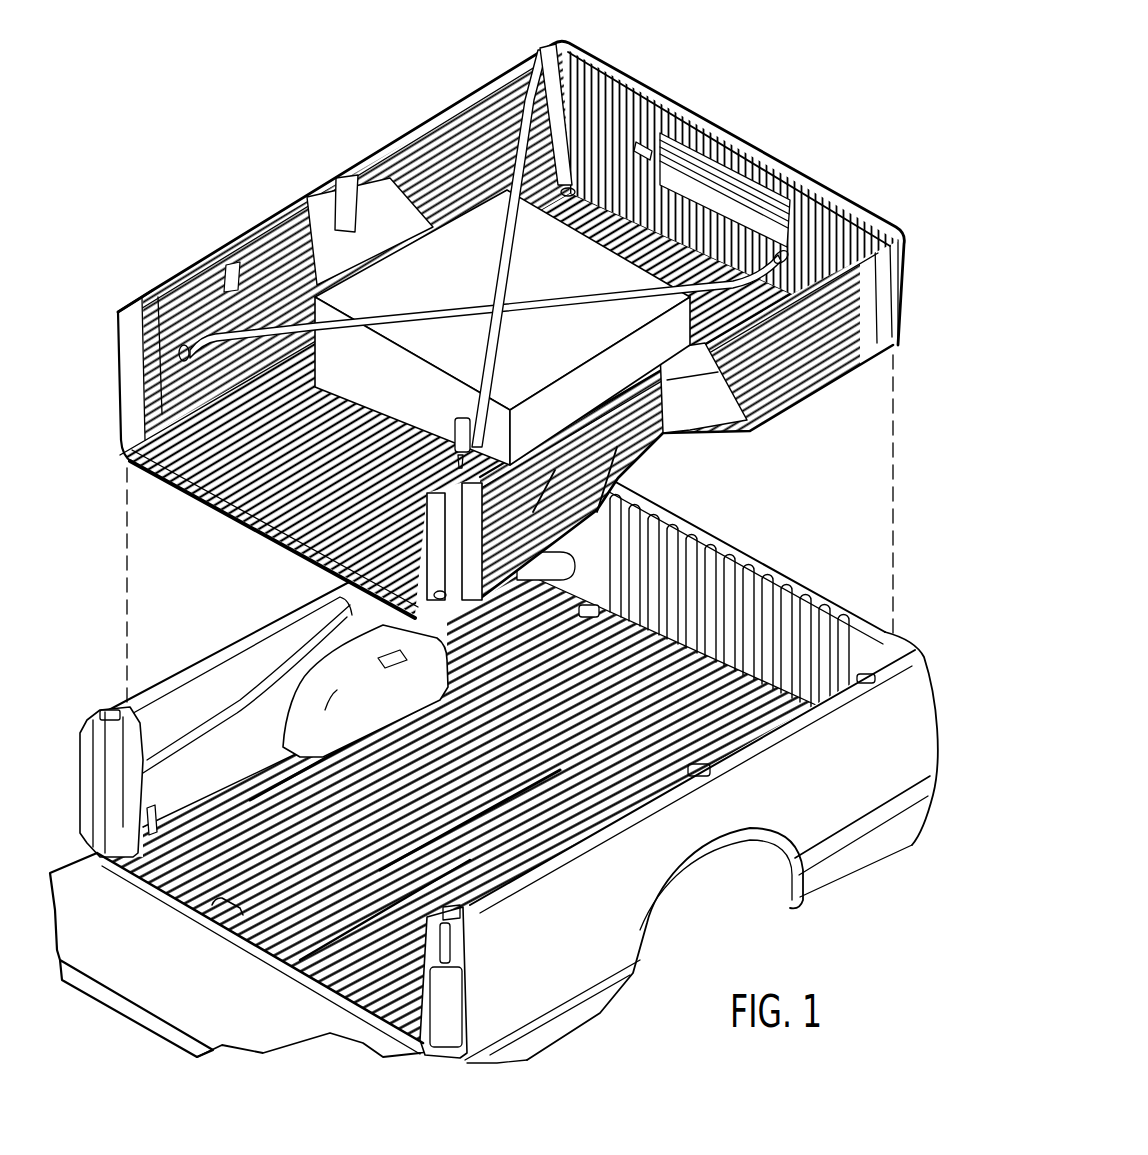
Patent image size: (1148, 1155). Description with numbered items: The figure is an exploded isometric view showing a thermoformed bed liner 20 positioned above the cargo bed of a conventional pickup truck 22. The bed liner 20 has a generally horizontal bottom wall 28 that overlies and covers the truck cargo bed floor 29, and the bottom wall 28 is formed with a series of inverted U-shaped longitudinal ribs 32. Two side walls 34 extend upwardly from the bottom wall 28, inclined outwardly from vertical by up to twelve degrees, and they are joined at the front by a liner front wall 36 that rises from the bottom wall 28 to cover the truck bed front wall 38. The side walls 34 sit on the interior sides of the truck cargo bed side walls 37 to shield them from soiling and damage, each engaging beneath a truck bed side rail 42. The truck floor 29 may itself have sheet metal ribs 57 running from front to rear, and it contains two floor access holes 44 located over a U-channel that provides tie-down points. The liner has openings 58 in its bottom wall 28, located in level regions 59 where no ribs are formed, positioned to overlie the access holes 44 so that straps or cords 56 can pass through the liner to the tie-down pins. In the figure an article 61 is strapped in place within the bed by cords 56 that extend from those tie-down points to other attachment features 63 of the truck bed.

The bed liner 20 is at (513, 318).
The pickup truck 22 is at (495, 756).
The bottom wall 28 is at (233, 520).
The truck cargo bed floor 29 is at (217, 903).
The longitudinal ribs 32 is at (180, 473).
The side walls 34 is at (293, 203).
The liner front wall 36 is at (637, 84).
The truck cargo bed side walls 37 is at (190, 732).
The truck bed front wall 38 is at (673, 523).
The truck bed side rail 42 is at (231, 648).
The floor access holes 44 is at (590, 610).
The straps or cords 56 is at (490, 366).
The ribs 57 is at (160, 890).
The openings 58 is at (547, 77).
The level regions 59 is at (643, 148).
The article 61 is at (410, 397).
The attachment features 63 is at (148, 810).